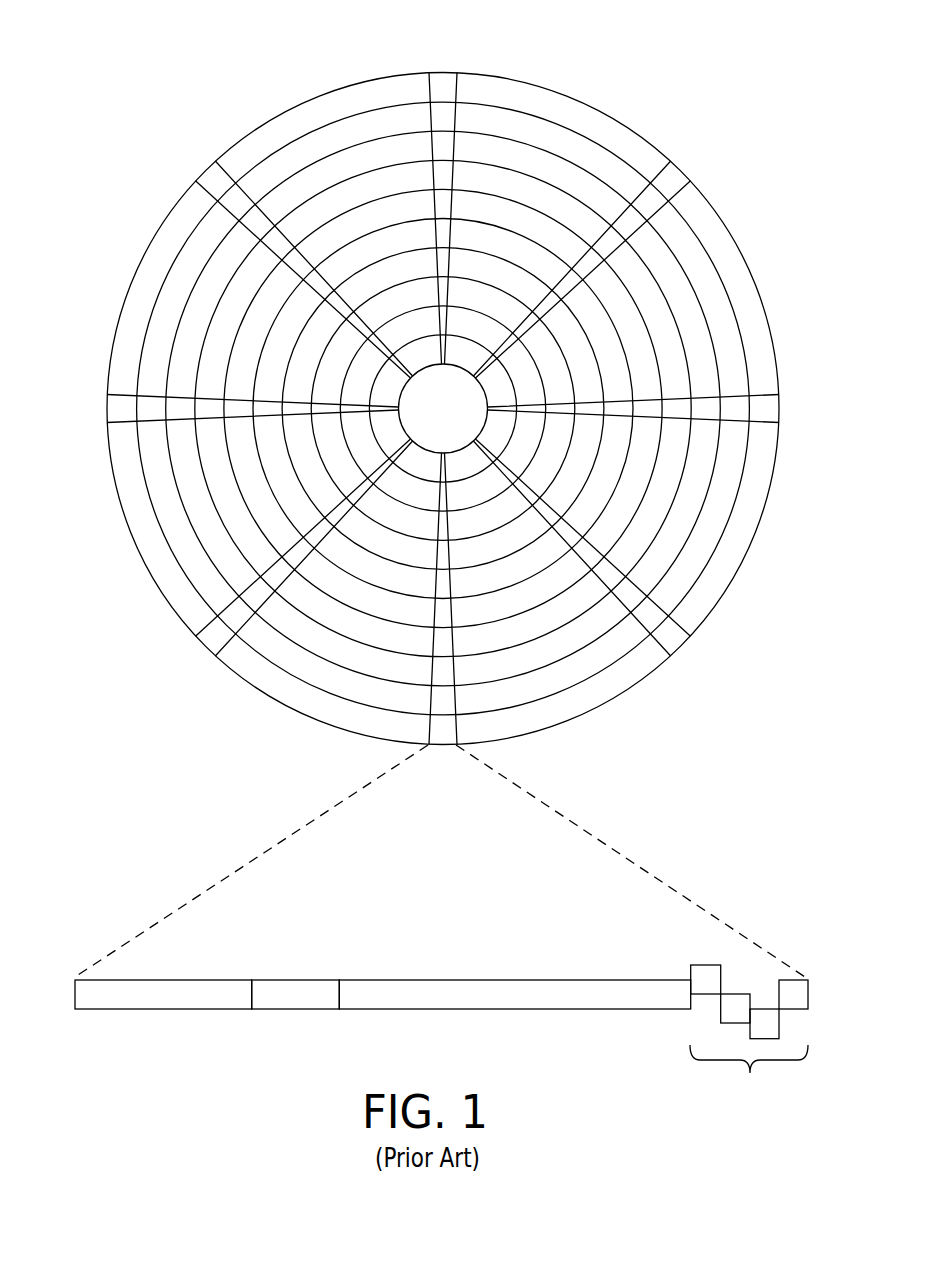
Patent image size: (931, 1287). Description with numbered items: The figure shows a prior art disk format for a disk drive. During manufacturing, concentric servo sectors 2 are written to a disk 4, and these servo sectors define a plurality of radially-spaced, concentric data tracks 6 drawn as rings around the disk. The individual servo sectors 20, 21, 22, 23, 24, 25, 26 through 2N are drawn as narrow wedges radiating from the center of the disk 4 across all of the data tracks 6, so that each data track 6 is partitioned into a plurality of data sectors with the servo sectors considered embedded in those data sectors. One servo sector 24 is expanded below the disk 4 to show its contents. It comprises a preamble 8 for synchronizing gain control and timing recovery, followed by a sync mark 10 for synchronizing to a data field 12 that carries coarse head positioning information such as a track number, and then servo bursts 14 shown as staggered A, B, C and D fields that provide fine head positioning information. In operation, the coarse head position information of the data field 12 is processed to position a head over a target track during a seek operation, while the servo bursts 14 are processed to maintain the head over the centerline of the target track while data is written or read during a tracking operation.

The disk 4 is at (190, 74).
The data tracks 6 is at (557, 140).
The servo sectors 2 is at (445, 495).
The servo sector 20 is at (443, 82).
The servo sector 21 is at (672, 180).
The servo sector 22 is at (768, 411).
The servo sector 23 is at (672, 640).
The servo sector 24 is at (292, 822).
The servo sector 25 is at (210, 642).
The servo sector 26 is at (112, 408).
The servo sector 2N is at (210, 168).
The preamble 8 is at (143, 1009).
The sync mark 10 is at (292, 1009).
The data field 12 is at (503, 1009).
The servo bursts 14 is at (672, 942).